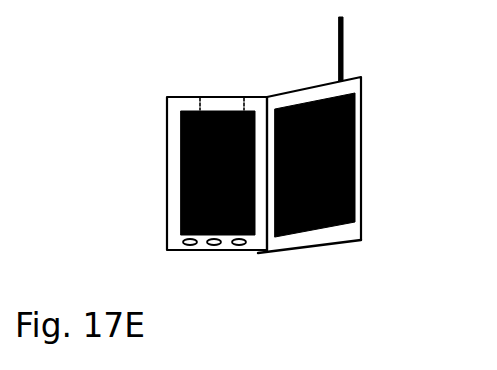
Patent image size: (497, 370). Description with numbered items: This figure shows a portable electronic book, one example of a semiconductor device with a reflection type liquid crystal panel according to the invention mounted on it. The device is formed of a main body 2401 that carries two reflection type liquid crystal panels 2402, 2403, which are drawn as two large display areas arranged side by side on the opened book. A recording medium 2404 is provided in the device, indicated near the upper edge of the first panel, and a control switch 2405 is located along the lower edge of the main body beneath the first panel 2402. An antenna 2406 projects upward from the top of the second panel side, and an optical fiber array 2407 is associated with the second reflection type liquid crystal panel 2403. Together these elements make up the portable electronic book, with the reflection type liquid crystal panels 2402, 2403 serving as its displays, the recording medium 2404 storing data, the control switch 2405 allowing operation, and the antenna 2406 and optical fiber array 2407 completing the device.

The main body 2401 is at (302, 237).
The reflection type liquid crystal panel 2402 is at (185, 172).
The reflection type liquid crystal panel 2403 is at (355, 242).
The recording medium 2404 is at (218, 104).
The control switch 2405 is at (180, 242).
The antenna 2406 is at (342, 60).
The optical fiber array 2407 is at (355, 141).